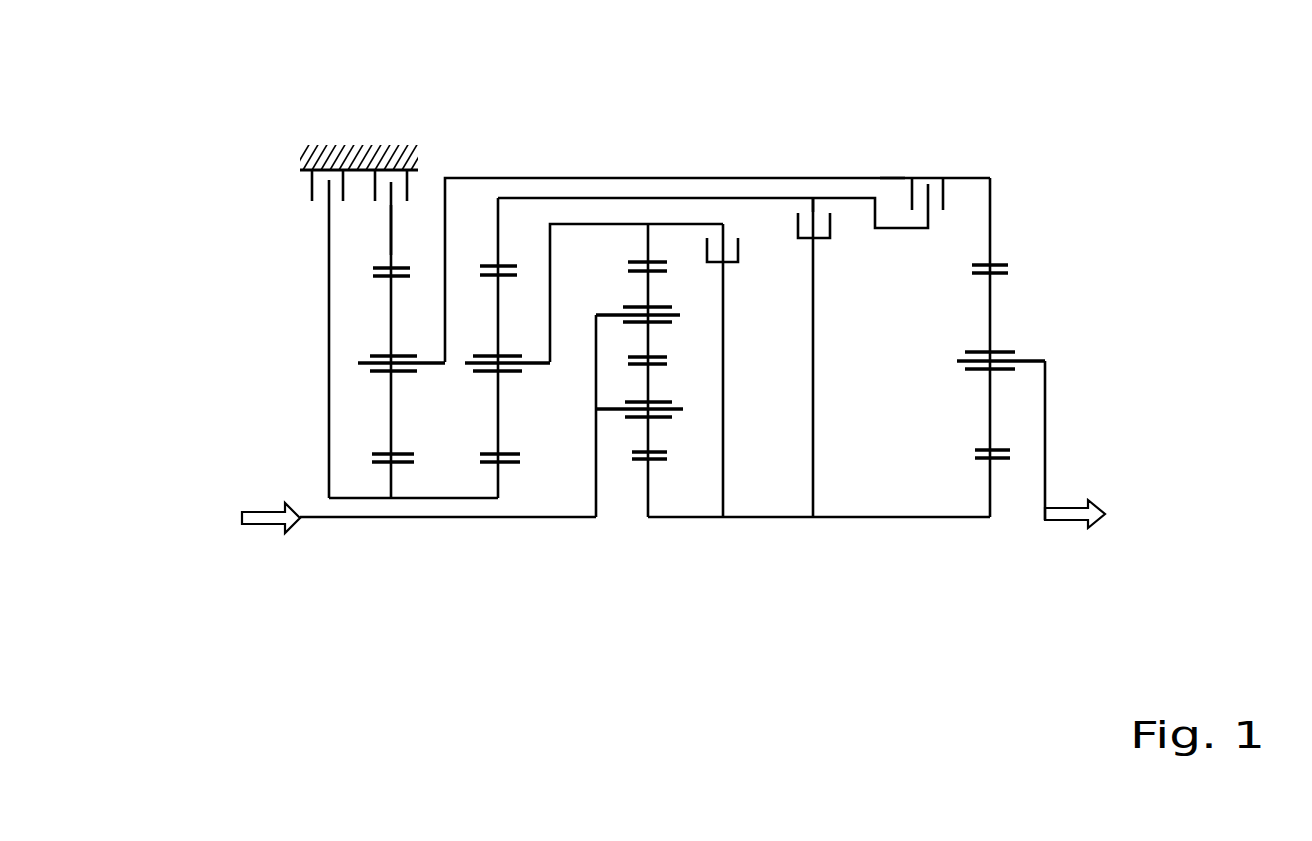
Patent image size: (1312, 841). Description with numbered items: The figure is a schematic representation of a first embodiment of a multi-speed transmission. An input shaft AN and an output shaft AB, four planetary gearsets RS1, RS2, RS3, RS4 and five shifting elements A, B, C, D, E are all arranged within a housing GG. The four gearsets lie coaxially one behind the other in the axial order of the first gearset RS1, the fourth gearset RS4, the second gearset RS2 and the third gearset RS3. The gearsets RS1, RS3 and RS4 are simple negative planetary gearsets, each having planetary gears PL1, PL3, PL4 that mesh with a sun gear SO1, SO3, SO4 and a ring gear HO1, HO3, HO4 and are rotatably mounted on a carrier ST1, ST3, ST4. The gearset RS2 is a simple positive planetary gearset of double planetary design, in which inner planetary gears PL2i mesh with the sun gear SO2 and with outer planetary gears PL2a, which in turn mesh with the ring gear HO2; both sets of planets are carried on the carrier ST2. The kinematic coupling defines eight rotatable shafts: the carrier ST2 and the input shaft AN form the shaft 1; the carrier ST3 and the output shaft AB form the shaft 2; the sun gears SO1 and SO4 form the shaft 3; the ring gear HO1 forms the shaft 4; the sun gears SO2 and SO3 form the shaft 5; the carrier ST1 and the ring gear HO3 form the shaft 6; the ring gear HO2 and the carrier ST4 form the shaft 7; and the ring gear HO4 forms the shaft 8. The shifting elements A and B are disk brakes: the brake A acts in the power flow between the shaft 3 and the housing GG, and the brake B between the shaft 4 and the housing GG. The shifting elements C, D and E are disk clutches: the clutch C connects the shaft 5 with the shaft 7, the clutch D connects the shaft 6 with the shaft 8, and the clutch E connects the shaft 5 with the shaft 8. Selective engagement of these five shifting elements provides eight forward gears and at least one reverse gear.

The housing GG is at (362, 147).
The input shaft AN is at (253, 525).
The output shaft AB is at (1085, 516).
The brake A is at (312, 198).
The brake B is at (378, 198).
The clutch C is at (738, 262).
The clutch D is at (967, 177).
The clutch E is at (833, 226).
The shaft 1 is at (596, 473).
The shaft 2 is at (1043, 360).
The shaft 3 is at (360, 498).
The shaft 4 is at (392, 228).
The shaft 5 is at (880, 517).
The shaft 6 is at (902, 177).
The shaft 7 is at (607, 407).
The shaft 8 is at (801, 211).
The planetary gears of the first planetary gearset PL1 is at (391, 318).
The ring gear of the first planetary gearset HO1 is at (390, 250).
The carrier of the first planetary gearset ST1 is at (360, 368).
The sun gear of the first planetary gearset SO1 is at (393, 477).
The first planetary gearset RS1 is at (412, 388).
The outer planetary gears of the second planetary gearset PL2a is at (648, 289).
The inner planetary gears of the second planetary gearset PL2i is at (650, 383).
The ring gear of the second planetary gearset HO2 is at (648, 234).
The carrier of the second planetary gearset ST2 is at (596, 314).
The sun gear of the second planetary gearset SO2 is at (651, 485).
The second planetary gearset RS2 is at (637, 432).
The planetary gears of the third planetary gearset PL3 is at (990, 313).
The ring gear of the third planetary gearset HO3 is at (990, 226).
The carrier of the third planetary gearset ST3 is at (1025, 357).
The sun gear of the third planetary gearset SO3 is at (993, 477).
The third planetary gearset RS3 is at (1002, 383).
The planetary gears of the fourth planetary gearset PL4 is at (500, 345).
The ring gear of the fourth planetary gearset HO4 is at (497, 255).
The carrier of the fourth planetary gearset ST4 is at (537, 360).
The sun gear of the fourth planetary gearset SO4 is at (500, 482).
The fourth planetary gearset RS4 is at (485, 385).